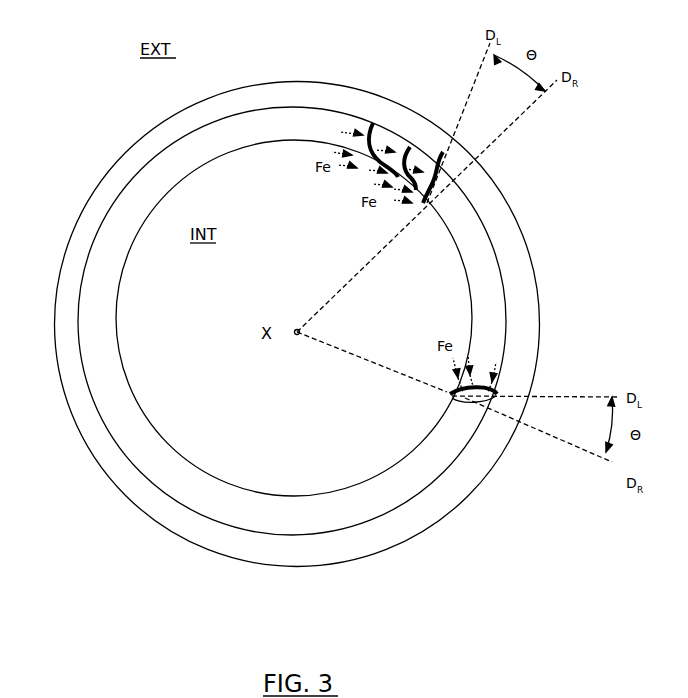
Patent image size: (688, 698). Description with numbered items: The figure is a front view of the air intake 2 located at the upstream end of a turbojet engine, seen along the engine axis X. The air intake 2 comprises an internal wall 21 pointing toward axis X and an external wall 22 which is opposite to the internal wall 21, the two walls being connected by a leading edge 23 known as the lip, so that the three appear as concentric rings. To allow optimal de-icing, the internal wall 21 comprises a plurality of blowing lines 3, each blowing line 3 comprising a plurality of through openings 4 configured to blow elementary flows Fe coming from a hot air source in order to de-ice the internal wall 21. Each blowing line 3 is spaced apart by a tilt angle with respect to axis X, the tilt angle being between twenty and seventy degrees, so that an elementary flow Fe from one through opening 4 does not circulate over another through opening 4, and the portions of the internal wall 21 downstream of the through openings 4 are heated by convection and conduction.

The air intake 2 is at (275, 324).
The internal wall 21 is at (118, 347).
The external wall 22 is at (62, 290).
The leading edge 23 is at (86, 250).
The blowing line 3 is at (370, 117).
The through opening 4 is at (447, 394).